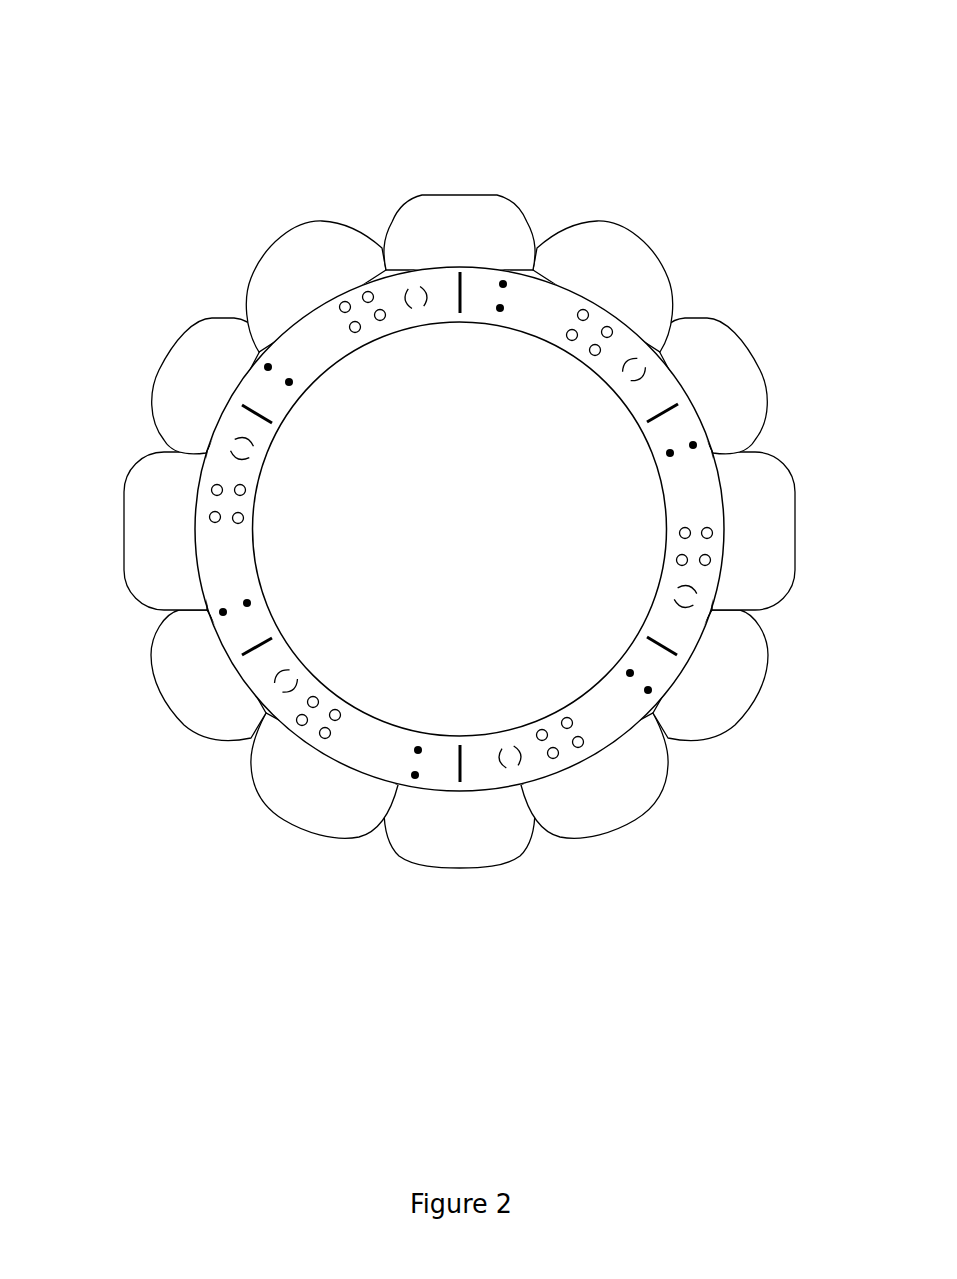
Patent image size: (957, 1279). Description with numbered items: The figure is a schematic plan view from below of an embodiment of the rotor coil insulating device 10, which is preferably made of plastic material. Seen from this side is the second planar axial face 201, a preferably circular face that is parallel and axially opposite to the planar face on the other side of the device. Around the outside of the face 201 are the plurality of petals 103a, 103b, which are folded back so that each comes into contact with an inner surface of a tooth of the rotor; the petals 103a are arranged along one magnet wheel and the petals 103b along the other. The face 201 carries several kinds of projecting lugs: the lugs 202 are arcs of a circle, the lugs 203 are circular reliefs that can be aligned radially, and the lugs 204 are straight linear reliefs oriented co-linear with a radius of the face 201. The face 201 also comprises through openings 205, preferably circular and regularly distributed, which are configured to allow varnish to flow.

The rotor coil insulating device 10 is at (458, 442).
The second planar axial face 201 is at (700, 494).
The lugs 202 is at (650, 371).
The lugs 203 is at (504, 282).
The lugs 204 is at (460, 272).
The through opening 205 is at (353, 318).
The petals 103a is at (190, 375).
The petals 103b is at (140, 527).